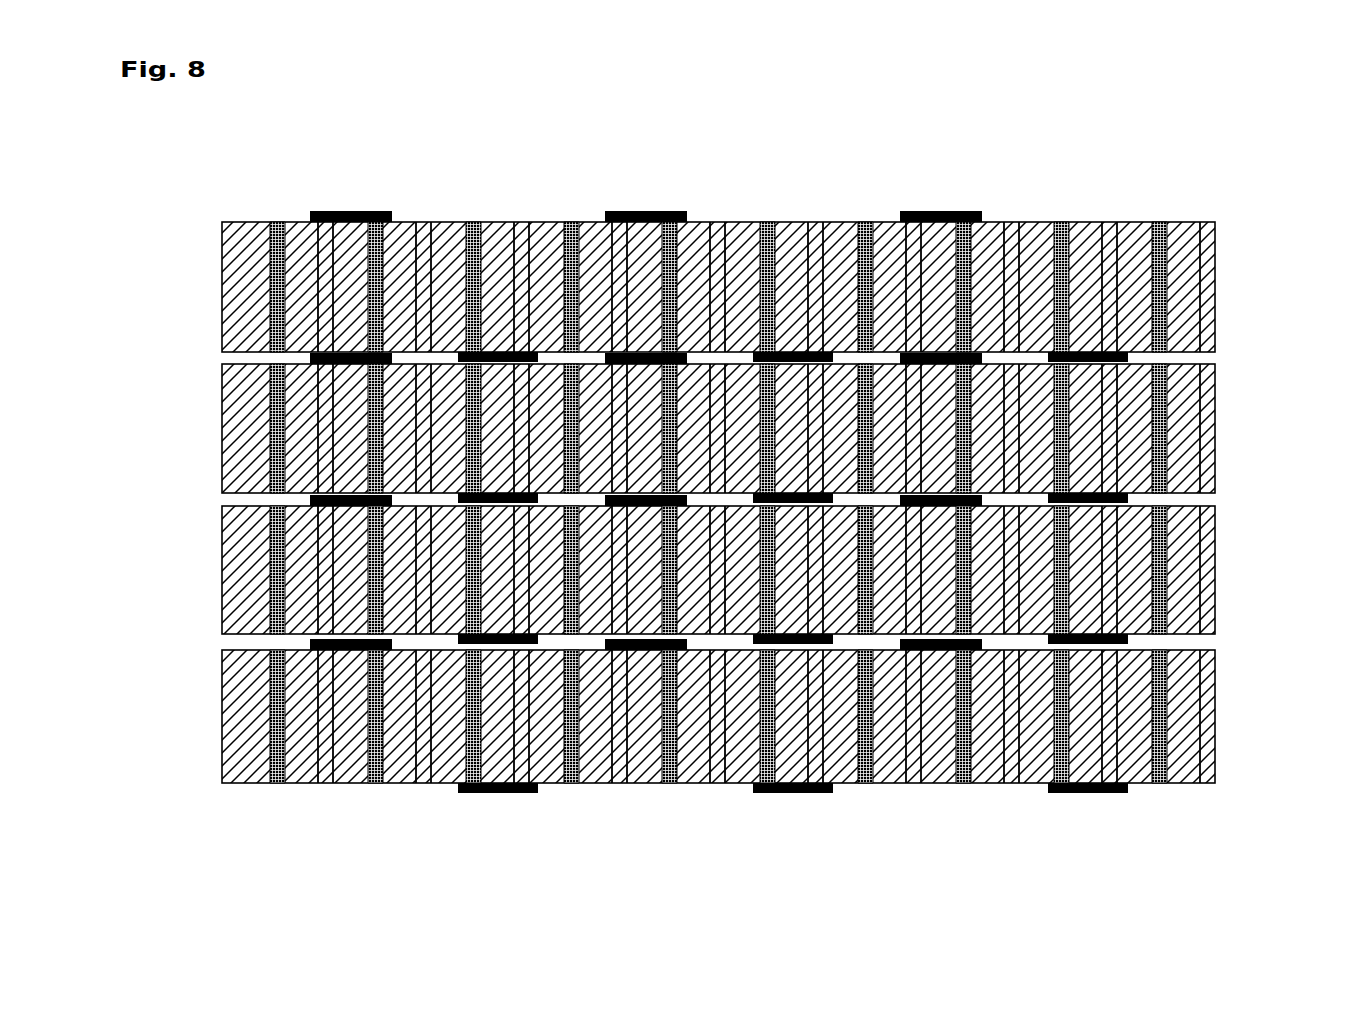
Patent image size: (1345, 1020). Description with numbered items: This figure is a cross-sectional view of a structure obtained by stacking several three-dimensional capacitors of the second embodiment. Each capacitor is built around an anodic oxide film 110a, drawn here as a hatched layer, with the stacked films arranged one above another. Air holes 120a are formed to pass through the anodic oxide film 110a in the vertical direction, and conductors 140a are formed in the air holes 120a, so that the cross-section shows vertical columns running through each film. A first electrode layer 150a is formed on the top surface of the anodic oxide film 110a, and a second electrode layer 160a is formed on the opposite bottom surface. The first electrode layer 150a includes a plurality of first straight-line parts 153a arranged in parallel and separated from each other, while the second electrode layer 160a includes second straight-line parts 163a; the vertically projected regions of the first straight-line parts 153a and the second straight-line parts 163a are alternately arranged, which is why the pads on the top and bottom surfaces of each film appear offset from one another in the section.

The anodic oxide film 110a is at (1209, 314).
The air holes 120a is at (1165, 249).
The conductors 140a is at (1160, 237).
The first electrode layer 150a is at (646, 430).
The first straight-line parts 153a is at (345, 221).
The second electrode layer 160a is at (793, 572).
The second straight-line parts 163a is at (497, 493).